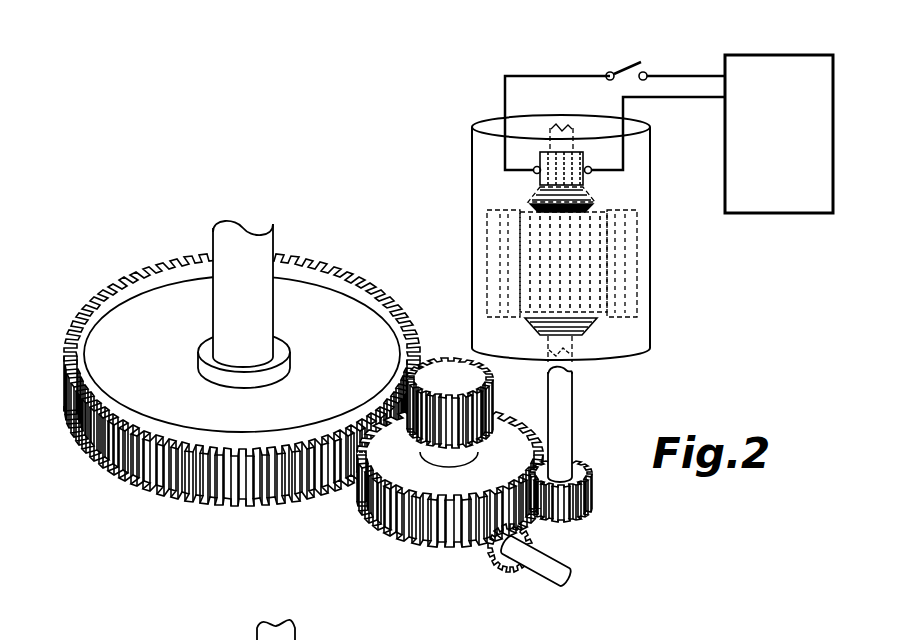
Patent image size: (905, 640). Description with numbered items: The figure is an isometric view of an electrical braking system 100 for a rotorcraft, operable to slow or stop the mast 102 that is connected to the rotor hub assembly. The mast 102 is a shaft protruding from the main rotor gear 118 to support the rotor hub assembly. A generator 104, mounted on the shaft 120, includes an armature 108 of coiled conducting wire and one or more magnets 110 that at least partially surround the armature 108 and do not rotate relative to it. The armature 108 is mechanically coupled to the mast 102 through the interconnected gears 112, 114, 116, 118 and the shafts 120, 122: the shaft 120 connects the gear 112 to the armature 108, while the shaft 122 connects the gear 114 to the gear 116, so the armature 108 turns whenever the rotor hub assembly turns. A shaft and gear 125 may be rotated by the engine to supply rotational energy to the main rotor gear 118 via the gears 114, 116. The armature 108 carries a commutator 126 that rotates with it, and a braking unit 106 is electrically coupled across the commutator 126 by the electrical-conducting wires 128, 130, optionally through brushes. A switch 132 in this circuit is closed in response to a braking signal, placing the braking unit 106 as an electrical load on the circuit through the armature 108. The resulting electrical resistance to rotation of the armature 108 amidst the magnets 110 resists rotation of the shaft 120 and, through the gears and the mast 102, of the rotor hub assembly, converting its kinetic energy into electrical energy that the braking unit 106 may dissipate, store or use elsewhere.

The electrical braking system 100 is at (362, 170).
The mast 102 is at (222, 237).
The generator 104 is at (650, 313).
The braking unit 106 is at (797, 146).
The armature 108 is at (575, 330).
The magnets 110 is at (632, 272).
The gear 112 is at (595, 490).
The gear 114 is at (405, 528).
The gear 116 is at (448, 370).
The main rotor gear 118 is at (120, 460).
The shaft 120 is at (568, 425).
The shaft 122 is at (435, 458).
The shaft and gear 125 is at (505, 560).
The commutator 126 is at (535, 180).
The electrical-conducting wire 128 is at (552, 75).
The electrical-conducting wire 130 is at (680, 97).
The switch 132 is at (628, 62).